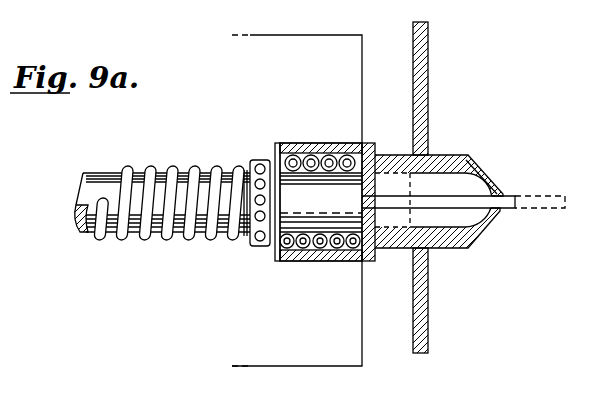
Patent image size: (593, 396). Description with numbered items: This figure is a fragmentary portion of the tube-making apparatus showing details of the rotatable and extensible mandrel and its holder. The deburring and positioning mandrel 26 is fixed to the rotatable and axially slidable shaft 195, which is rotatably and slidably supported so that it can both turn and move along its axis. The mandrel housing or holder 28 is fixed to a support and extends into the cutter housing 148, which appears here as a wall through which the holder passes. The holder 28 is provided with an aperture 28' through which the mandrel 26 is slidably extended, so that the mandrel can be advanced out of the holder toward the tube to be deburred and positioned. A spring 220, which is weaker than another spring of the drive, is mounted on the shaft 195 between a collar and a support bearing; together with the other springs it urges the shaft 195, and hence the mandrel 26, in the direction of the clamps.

The deburring and positioning mandrel 26 is at (503, 198).
The mandrel housing or holder 28 is at (452, 164).
The aperture 28' is at (458, 230).
The cutter housing 148 is at (430, 296).
The rotatable and axially slidable shaft 195 is at (196, 172).
The spring 220 is at (139, 170).